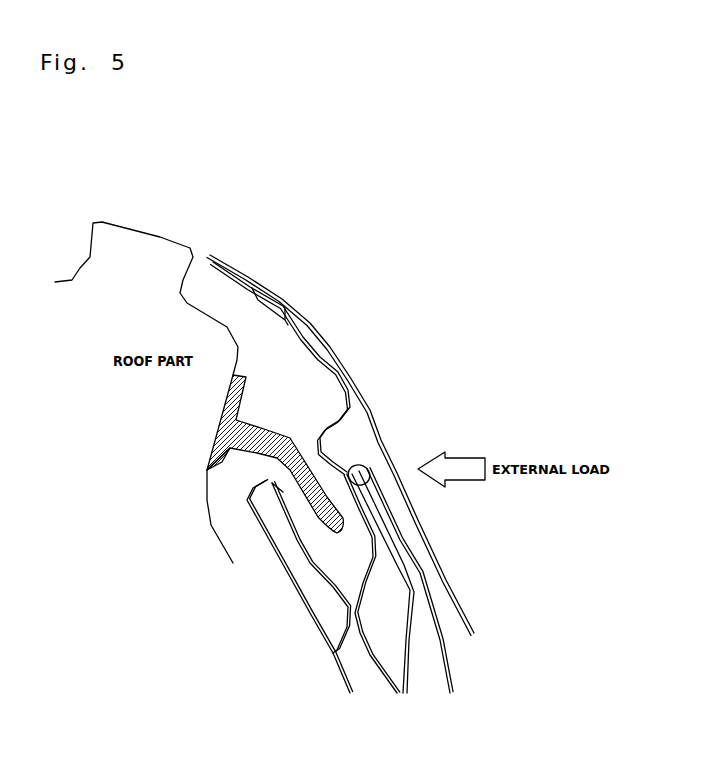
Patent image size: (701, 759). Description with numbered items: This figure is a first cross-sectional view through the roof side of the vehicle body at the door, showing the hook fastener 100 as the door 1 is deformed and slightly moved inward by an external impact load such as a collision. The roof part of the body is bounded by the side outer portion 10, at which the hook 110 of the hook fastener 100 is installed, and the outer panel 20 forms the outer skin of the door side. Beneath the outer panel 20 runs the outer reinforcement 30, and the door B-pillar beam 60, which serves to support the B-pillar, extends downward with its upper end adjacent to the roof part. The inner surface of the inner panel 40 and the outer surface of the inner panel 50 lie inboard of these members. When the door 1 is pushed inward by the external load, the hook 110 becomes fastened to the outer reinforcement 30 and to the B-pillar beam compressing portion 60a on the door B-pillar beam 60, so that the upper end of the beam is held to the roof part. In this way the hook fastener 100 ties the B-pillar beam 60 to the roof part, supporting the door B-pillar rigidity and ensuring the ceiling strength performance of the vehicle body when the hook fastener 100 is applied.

The door 1 is at (299, 216).
The side outer portion 10 is at (158, 236).
The outer panel 20 is at (369, 405).
The outer reinforcement 30 is at (305, 318).
The inner surface of the inner panel 40 is at (312, 563).
The outer surface of the inner panel 50 is at (313, 638).
The door B-pillar beam 60 is at (430, 601).
The B-pillar beam compressing portion 60a is at (370, 468).
The hook fastener 100 is at (287, 426).
The hook 110 is at (248, 452).